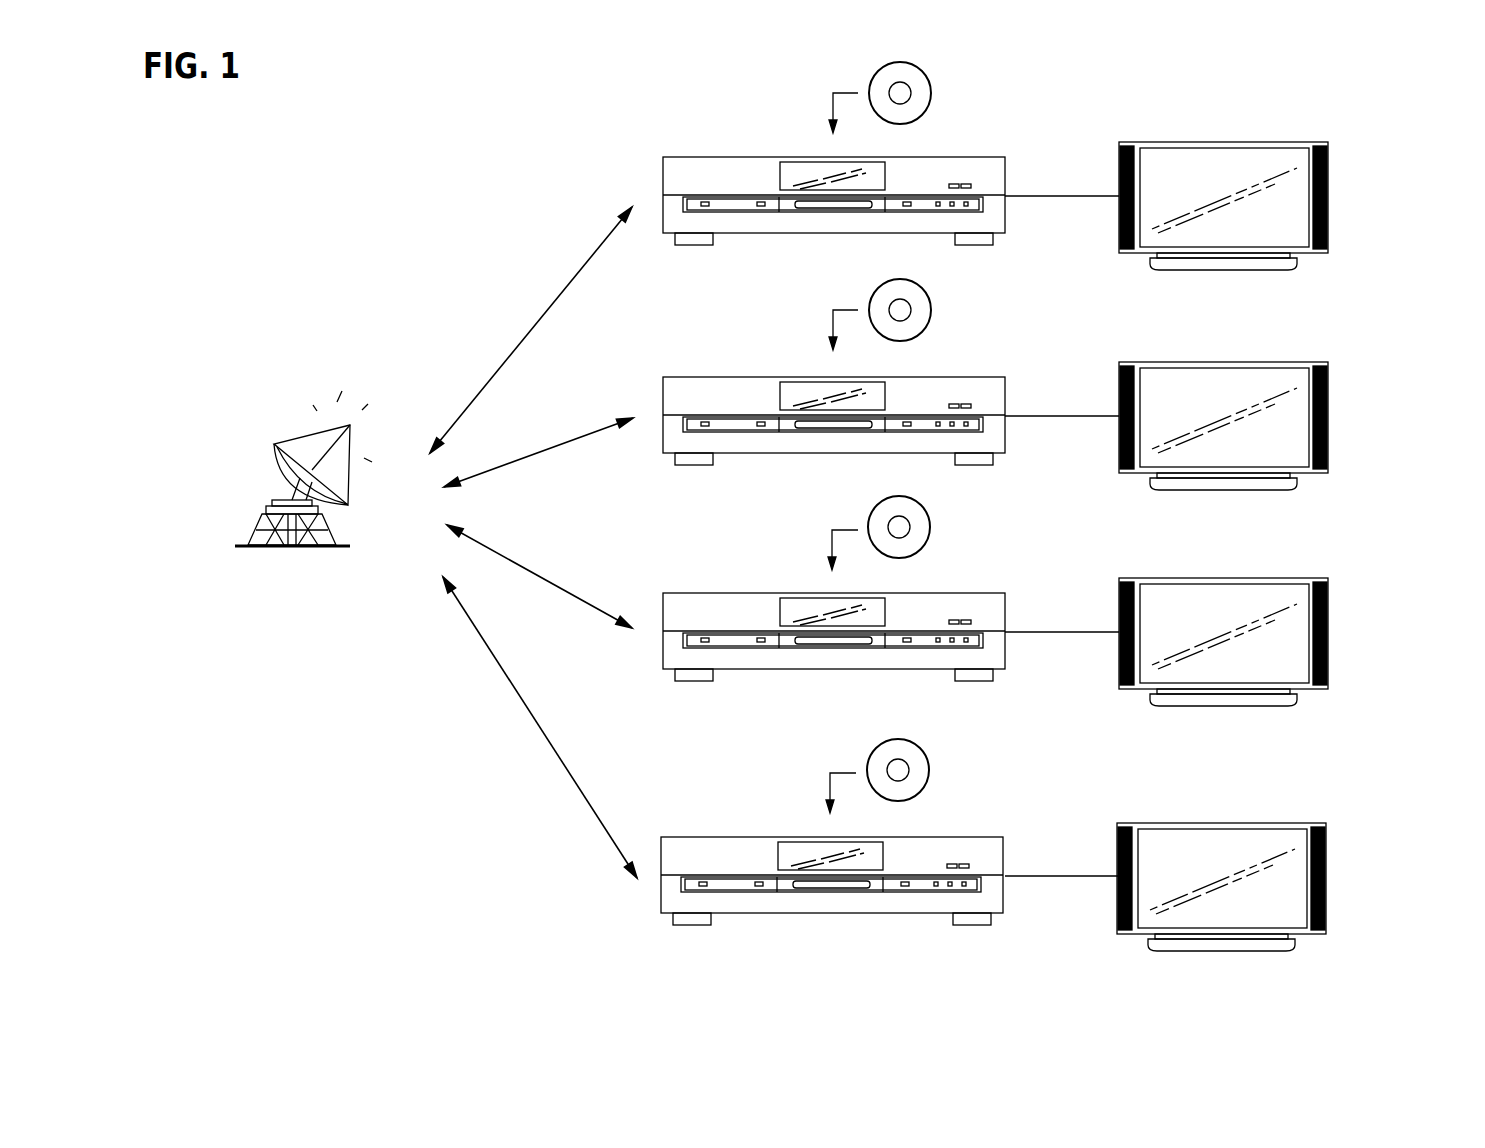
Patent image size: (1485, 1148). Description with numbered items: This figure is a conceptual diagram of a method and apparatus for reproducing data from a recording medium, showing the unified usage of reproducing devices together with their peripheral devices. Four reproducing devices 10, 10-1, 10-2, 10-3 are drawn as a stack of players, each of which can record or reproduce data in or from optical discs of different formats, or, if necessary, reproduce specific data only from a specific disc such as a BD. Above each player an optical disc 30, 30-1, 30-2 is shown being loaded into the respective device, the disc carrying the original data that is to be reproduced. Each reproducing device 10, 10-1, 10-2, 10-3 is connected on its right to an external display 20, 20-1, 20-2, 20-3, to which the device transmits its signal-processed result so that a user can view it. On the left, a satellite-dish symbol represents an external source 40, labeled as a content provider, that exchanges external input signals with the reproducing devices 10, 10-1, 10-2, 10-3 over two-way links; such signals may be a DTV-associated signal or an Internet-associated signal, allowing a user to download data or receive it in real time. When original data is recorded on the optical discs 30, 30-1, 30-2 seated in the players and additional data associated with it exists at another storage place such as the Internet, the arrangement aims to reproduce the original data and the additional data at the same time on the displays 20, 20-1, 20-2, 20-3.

The reproducing device 10 is at (970, 165).
The reproducing device 10-1 is at (970, 385).
The reproducing device 10-2 is at (970, 605).
The reproducing device 10-3 is at (968, 846).
The external display 20 is at (1330, 192).
The external display 20-1 is at (1330, 412).
The external display 20-2 is at (1330, 628).
The external display 20-3 is at (1330, 874).
The optical disc 30 is at (923, 88).
The optical disc 30-1 is at (923, 305).
The optical disc 30-2 is at (923, 522).
The external source (content provider) 40 is at (327, 402).